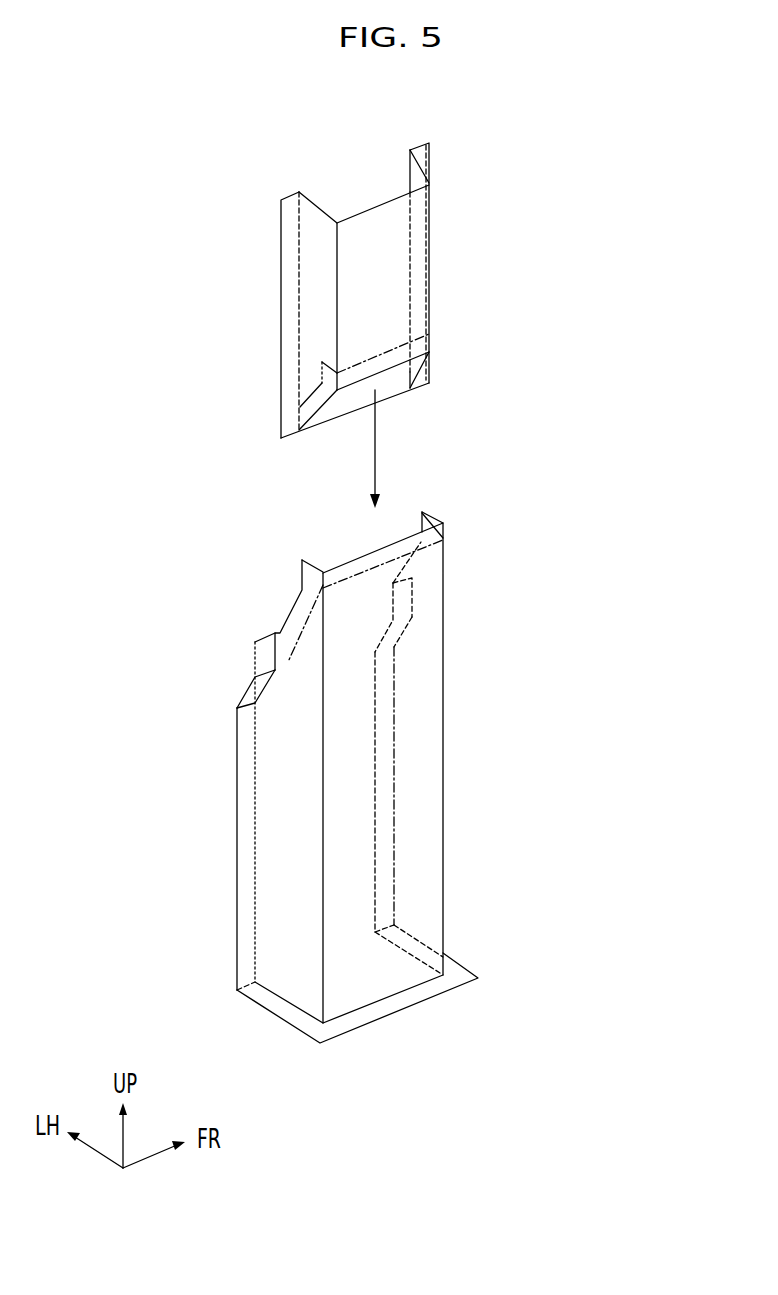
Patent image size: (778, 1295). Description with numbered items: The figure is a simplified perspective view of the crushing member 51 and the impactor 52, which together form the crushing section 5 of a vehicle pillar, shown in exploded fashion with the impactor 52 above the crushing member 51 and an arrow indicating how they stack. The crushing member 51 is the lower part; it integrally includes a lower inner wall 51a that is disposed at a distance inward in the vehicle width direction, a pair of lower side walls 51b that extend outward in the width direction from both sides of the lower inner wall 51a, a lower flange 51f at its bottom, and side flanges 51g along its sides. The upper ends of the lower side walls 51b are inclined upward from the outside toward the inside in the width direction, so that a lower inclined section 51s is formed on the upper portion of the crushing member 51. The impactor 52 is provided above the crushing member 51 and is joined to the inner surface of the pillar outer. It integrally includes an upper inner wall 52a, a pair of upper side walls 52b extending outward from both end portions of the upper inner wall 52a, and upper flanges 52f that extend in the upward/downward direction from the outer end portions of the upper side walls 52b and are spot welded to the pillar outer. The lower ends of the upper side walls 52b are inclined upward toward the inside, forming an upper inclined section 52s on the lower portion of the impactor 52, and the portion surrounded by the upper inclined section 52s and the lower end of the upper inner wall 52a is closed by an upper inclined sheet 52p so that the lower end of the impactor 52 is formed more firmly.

The bracket assembly 5 is at (558, 387).
The impactor 52 is at (435, 229).
The upper inner wall 52a is at (393, 306).
The pair of upper side walls 52b is at (317, 327).
The upper flanges 52f is at (290, 392).
The upper inclined sheet 52p is at (390, 381).
The upper inclined section 52s is at (322, 410).
The crushing member 51 is at (447, 607).
The lower inner wall 51a is at (423, 747).
The pair of lower side walls 51b is at (285, 833).
The lower flange 51f is at (405, 1000).
The side flanges 51g is at (247, 918).
The lower inclined section 51s is at (287, 608).